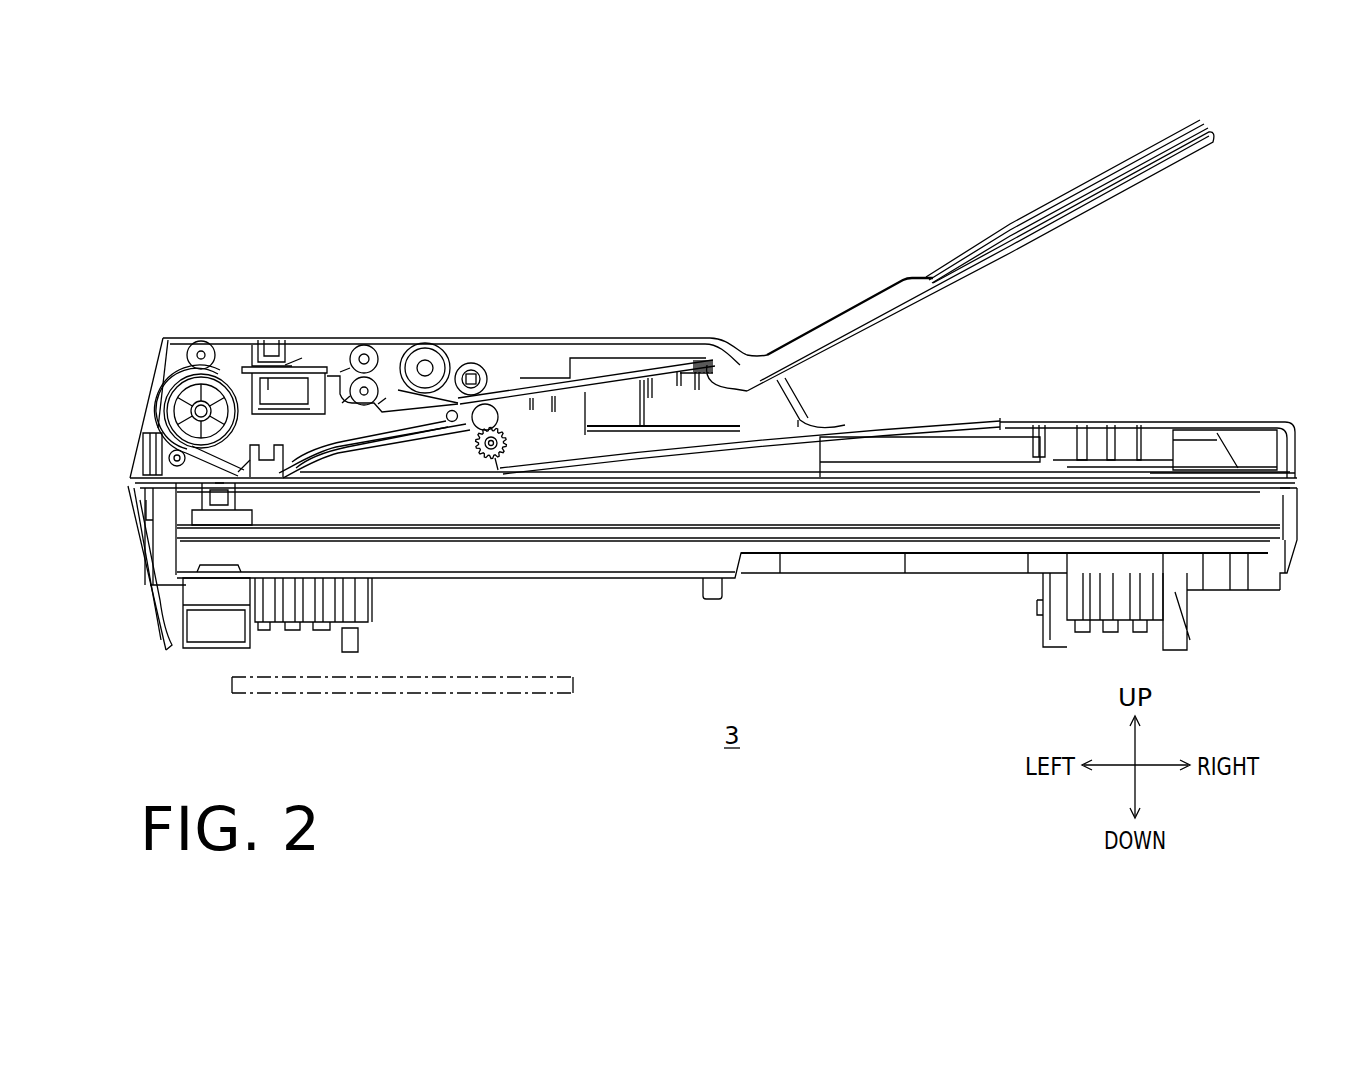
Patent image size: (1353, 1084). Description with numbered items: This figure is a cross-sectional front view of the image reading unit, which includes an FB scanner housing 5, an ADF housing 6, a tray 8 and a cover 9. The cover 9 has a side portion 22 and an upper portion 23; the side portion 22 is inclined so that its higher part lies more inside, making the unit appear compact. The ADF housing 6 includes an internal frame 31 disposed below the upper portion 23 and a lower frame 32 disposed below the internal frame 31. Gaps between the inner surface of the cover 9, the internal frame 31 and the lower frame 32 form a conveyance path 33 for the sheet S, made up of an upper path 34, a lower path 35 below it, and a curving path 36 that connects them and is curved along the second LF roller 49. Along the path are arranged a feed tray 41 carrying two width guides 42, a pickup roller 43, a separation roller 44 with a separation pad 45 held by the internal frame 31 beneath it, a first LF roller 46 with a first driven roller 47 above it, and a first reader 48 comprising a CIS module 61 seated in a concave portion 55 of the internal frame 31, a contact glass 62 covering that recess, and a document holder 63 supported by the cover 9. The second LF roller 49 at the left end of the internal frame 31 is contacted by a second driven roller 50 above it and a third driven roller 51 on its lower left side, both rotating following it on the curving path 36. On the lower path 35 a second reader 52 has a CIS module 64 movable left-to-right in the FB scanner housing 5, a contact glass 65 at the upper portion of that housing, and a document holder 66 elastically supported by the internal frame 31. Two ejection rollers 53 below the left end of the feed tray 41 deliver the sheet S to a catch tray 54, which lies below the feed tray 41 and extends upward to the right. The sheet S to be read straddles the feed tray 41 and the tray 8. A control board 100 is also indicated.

The FB scanner housing 5 is at (1298, 562).
The ADF housing 6 is at (1298, 428).
The tray 8 is at (1132, 186).
The cover 9 is at (229, 334).
The side portion 22 is at (156, 422).
The upper portion 23 is at (357, 344).
The internal frame 31 is at (330, 356).
The lower frame 32 is at (418, 452).
The conveyance path 33 is at (156, 352).
The upper path 34 is at (401, 356).
The lower path 35 is at (334, 474).
The curving path 36 is at (171, 372).
The feed tray 41 is at (645, 378).
The width guides 42 is at (600, 366).
The pickup roller 43 is at (480, 346).
The separation roller 44 is at (433, 348).
The separation pad 45 is at (440, 406).
The first LF roller 46 is at (388, 346).
The first driven roller 47 is at (362, 348).
The first reader 48 is at (323, 417).
The second LF roller 49 is at (181, 352).
The second driven roller 50 is at (204, 345).
The third driven roller 51 is at (158, 620).
The second reader 52 is at (467, 540).
The ejection rollers 53 is at (494, 418).
The catch tray 54 is at (887, 418).
The concave portion 55 is at (315, 370).
The CIS module 61 is at (281, 404).
The contact glass 62 is at (303, 375).
The document holder 63 is at (262, 343).
The CIS module 64 is at (210, 515).
The contact glass 65 is at (688, 486).
The document holder 66 is at (298, 461).
The control board 100 is at (427, 700).
The sheet S is at (1095, 166).